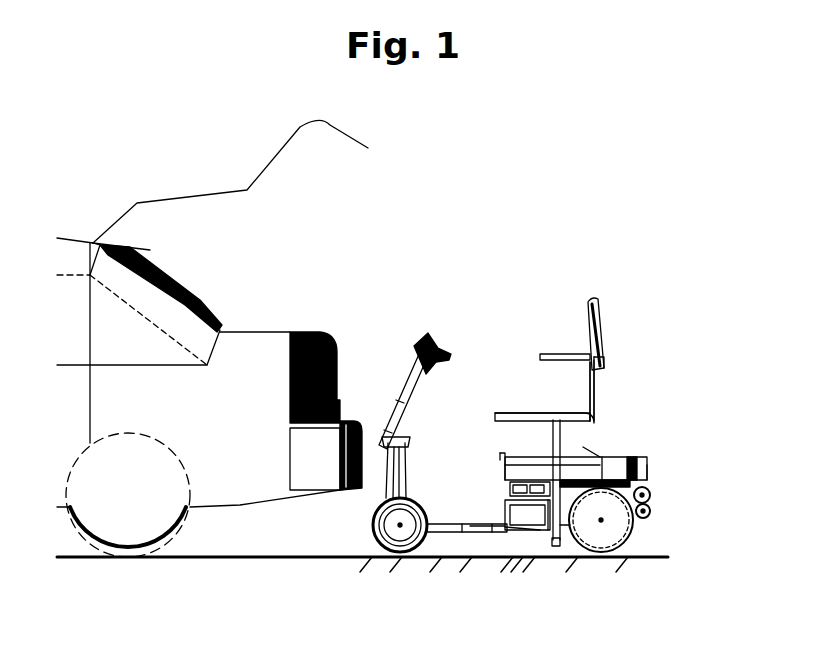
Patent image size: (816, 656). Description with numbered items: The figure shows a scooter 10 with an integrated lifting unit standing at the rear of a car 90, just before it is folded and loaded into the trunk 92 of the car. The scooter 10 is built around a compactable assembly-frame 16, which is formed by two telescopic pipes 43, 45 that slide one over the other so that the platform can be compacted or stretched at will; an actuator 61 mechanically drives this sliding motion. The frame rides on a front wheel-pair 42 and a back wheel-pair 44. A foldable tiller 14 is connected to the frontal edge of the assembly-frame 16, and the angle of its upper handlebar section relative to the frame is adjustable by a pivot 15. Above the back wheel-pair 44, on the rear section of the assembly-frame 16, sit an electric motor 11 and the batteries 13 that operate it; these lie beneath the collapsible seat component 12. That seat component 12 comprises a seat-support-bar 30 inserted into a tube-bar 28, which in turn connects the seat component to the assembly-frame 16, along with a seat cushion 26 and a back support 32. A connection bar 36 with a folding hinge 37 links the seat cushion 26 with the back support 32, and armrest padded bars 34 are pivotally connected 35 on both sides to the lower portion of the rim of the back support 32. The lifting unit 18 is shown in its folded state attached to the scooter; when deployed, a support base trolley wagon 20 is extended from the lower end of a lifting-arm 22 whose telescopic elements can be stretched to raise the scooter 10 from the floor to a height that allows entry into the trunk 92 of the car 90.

The scooter 10 is at (527, 307).
The electric motor 11 is at (540, 500).
The collapsible seat component 12 is at (618, 370).
The batteries 13 is at (568, 537).
The foldable tiller 14 is at (403, 437).
The pivot 15 is at (390, 420).
The compactable assembly-frame 16 is at (453, 542).
The lifting unit 18 is at (618, 433).
The support base trolley wagon 20 is at (652, 474).
The lifting-arm 22 is at (500, 453).
The seat cushion 26 is at (517, 410).
The tube-bar 28 is at (557, 546).
The seat-support-bar 30 is at (583, 447).
The back support 32 is at (603, 312).
The armrest padded bars 34 is at (568, 354).
The pivotal connection 35 is at (603, 352).
The connection bar 36 is at (593, 400).
The folding hinge 37 is at (593, 390).
The front wheel-pair 42 is at (378, 555).
The telescopic pipe 43 is at (485, 533).
The back wheel-pair 44 is at (607, 540).
The telescopic pipe 45 is at (437, 533).
The actuator 61 is at (548, 530).
The car 90 is at (138, 199).
The trunk 92 is at (168, 272).